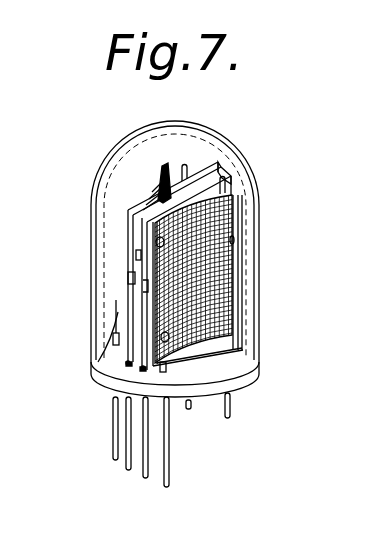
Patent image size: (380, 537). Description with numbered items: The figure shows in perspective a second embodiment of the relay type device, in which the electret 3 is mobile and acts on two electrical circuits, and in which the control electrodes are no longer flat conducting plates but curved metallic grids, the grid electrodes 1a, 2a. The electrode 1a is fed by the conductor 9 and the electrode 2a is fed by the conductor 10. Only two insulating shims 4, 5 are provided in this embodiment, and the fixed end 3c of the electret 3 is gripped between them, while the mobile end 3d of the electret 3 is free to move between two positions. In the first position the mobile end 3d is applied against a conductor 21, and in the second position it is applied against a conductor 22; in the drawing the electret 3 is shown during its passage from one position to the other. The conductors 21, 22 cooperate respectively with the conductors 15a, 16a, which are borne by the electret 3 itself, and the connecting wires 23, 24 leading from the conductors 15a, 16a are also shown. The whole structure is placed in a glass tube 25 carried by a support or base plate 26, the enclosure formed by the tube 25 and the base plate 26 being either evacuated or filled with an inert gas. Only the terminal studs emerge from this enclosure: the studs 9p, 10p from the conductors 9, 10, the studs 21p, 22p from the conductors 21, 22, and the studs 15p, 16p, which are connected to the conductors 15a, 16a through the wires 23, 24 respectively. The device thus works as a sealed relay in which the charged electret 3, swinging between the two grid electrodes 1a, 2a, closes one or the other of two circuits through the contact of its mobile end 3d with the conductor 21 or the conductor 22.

The glass tube 25 is at (131, 133).
The base plate 26 is at (243, 373).
The conductor 21 is at (186, 165).
The conductor 22 is at (226, 184).
The electret 3 is at (140, 210).
The mobile end of the electret 3d is at (221, 177).
The fixed end of the electret 3c is at (138, 255).
The control electrode 2a is at (233, 240).
The control electrode 1a is at (158, 182).
The insulating shim 5 is at (130, 220).
The insulating shim 4 is at (147, 238).
The conductor 15a is at (128, 276).
The conductor 16a is at (145, 290).
The conductor 9 is at (113, 340).
The connecting wire 23 is at (127, 363).
The connecting wire 24 is at (143, 368).
The conductor 10 is at (226, 362).
The stud 9p is at (113, 410).
The stud 15p is at (126, 443).
The stud 16p is at (145, 466).
The stud 10p is at (169, 467).
The stud 21p is at (191, 408).
The stud 22p is at (230, 408).